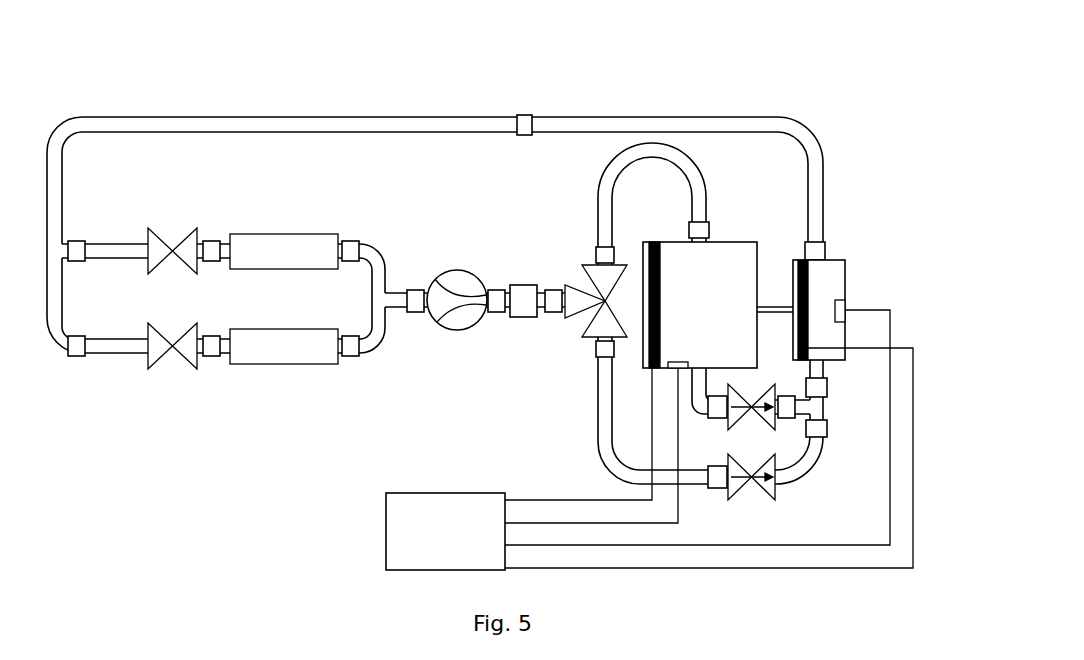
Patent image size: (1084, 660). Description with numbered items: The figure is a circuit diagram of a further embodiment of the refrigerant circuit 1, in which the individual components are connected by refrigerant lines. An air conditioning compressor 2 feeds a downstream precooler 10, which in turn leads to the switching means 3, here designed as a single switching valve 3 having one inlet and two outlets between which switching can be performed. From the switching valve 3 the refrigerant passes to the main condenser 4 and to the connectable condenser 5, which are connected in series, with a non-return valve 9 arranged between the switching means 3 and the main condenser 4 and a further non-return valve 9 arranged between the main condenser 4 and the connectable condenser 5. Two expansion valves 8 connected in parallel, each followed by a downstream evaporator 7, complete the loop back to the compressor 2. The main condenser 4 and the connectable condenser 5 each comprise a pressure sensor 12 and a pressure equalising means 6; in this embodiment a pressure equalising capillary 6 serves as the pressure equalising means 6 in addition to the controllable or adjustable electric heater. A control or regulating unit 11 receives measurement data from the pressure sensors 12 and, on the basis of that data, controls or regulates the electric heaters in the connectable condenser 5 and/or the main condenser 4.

The refrigerant circuit 1 is at (703, 87).
The air conditioning compressor 2 is at (468, 323).
The switching valve 3 is at (610, 287).
The main condenser 4 is at (814, 284).
The connectable condenser 5 is at (713, 253).
The pressure equalising means 6 is at (762, 307).
The evaporator 7 is at (258, 252).
The expansion valve 8 is at (158, 250).
The non-return valve 9 is at (737, 418).
The precooler 10 is at (523, 283).
The control or regulating unit 11 is at (440, 498).
The pressure sensor 12 is at (842, 307).